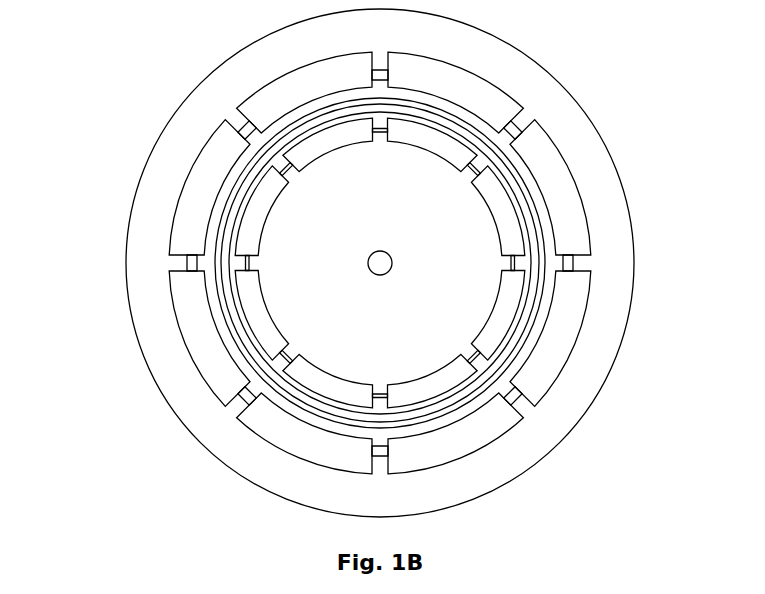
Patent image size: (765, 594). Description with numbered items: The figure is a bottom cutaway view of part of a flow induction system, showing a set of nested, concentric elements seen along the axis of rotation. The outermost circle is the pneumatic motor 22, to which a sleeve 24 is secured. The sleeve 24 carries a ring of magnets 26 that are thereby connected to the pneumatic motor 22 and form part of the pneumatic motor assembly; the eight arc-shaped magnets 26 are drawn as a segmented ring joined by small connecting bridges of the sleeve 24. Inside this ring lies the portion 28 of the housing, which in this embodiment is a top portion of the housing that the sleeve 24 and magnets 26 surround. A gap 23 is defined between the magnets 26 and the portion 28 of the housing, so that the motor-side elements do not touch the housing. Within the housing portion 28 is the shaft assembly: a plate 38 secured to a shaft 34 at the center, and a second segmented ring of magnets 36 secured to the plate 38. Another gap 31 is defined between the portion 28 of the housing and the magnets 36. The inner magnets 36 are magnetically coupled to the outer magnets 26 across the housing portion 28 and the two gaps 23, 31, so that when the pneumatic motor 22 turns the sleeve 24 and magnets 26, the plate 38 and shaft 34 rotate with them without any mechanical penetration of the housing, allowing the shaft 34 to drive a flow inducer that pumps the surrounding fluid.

The pneumatic motor 22 is at (207, 76).
The gap 23 is at (547, 227).
The sleeve 24 is at (187, 261).
The magnets 26 is at (380, 263).
The portion of the housing 28 is at (542, 253).
The gap 31 is at (526, 300).
The shaft 34 is at (384, 251).
The magnets 36 is at (380, 263).
The plate 38 is at (328, 238).